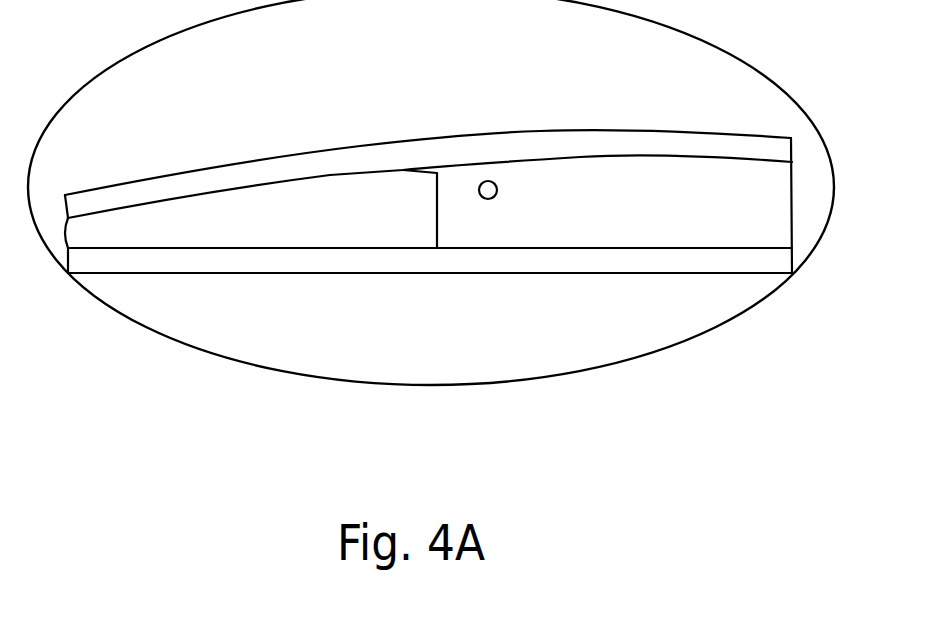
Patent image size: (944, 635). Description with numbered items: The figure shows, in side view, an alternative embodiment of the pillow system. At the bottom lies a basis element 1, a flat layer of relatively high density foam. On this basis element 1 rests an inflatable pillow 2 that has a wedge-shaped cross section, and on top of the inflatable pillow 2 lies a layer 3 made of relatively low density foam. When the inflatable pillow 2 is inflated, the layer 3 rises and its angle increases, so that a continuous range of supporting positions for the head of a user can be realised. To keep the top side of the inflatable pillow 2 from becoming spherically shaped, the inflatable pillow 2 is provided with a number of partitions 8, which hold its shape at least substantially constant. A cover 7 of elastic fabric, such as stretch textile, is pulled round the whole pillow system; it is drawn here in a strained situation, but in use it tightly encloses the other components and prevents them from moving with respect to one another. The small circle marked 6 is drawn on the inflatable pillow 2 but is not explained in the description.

The basis element 1 is at (768, 268).
The inflatable pillow 2 is at (791, 172).
The layer 3 is at (517, 130).
The hole 6 is at (497, 186).
The cover 7 is at (712, 330).
The partitions 8 is at (436, 209).